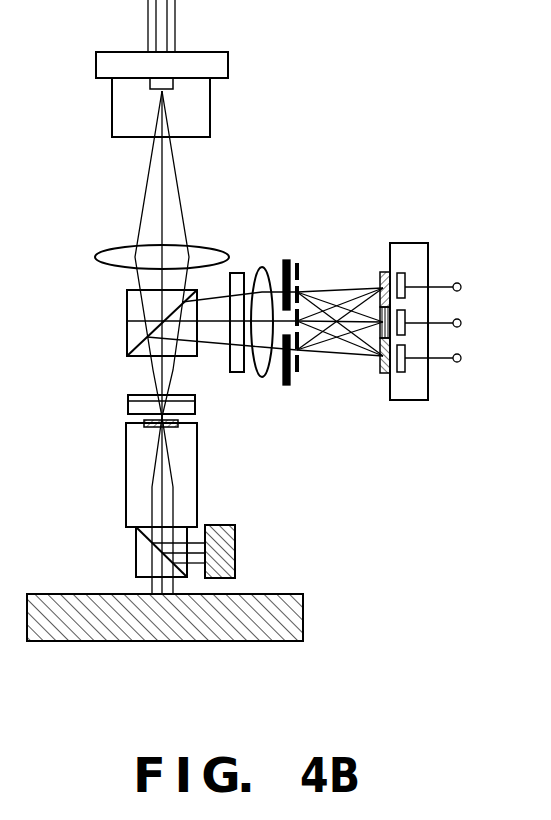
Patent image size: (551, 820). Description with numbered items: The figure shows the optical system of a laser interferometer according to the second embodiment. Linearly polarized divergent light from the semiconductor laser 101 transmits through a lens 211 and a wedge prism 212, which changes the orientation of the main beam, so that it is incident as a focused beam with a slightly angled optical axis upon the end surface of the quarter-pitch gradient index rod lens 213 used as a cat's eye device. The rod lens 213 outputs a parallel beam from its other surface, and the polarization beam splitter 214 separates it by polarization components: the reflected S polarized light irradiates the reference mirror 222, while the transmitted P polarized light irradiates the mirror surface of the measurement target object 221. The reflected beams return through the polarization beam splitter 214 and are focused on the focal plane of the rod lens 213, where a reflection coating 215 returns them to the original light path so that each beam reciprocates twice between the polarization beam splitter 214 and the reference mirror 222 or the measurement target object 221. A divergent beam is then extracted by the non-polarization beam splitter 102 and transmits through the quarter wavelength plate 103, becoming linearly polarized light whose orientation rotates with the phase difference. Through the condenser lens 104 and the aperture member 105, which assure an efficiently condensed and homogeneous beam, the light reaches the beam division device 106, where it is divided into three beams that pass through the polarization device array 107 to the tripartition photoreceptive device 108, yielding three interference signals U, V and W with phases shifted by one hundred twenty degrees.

The semiconductor laser 101 is at (210, 106).
The non-polarization beam splitter 102 is at (127, 320).
The quarter wavelength plate 103 is at (237, 373).
The condenser lens 104 is at (264, 270).
The aperture member 105 is at (287, 259).
The beam division device 106 is at (298, 262).
The polarization device array 107 is at (384, 271).
The tripartition photoreceptive device 108 is at (405, 272).
The lens 211 is at (113, 248).
The wedge prism 212 is at (129, 404).
The gradient index rod lens 213 is at (198, 496).
The polarization beam splitter 214 is at (133, 551).
The reflection coating 215 is at (178, 424).
The measurement target object 221 is at (212, 642).
The reference mirror 222 is at (236, 551).